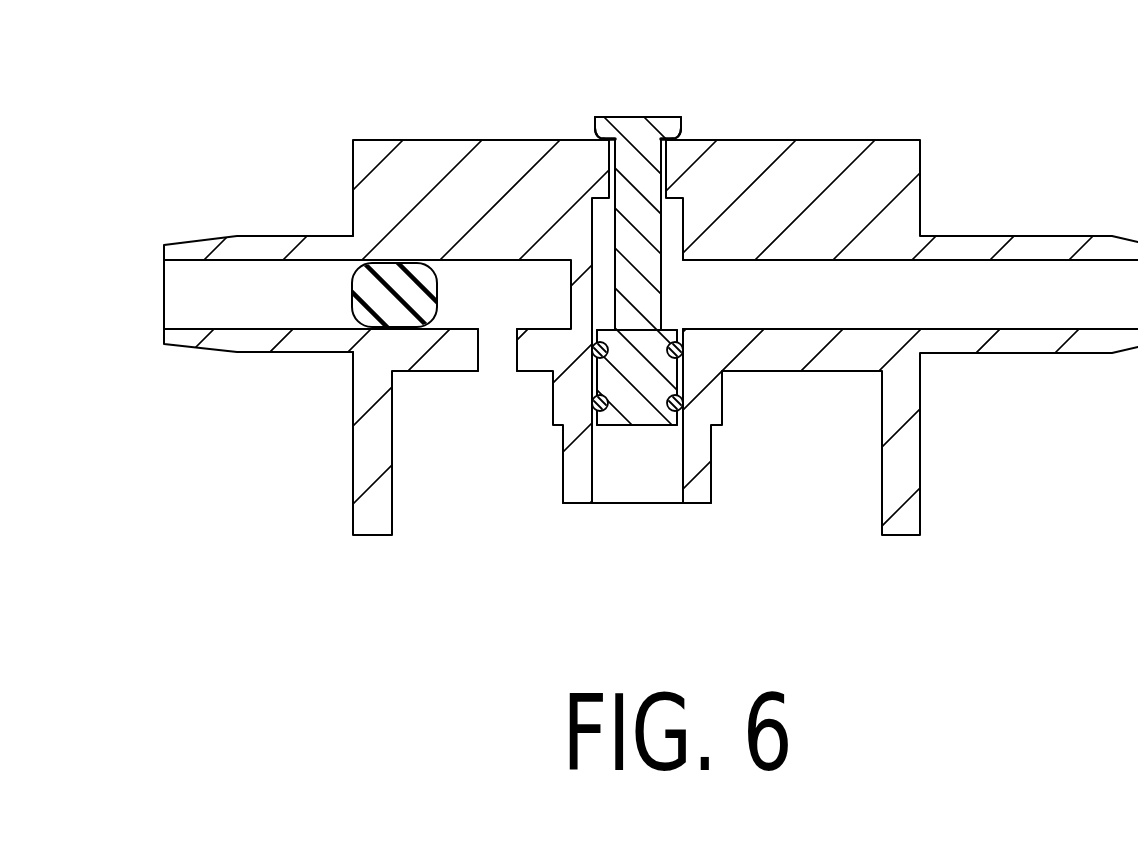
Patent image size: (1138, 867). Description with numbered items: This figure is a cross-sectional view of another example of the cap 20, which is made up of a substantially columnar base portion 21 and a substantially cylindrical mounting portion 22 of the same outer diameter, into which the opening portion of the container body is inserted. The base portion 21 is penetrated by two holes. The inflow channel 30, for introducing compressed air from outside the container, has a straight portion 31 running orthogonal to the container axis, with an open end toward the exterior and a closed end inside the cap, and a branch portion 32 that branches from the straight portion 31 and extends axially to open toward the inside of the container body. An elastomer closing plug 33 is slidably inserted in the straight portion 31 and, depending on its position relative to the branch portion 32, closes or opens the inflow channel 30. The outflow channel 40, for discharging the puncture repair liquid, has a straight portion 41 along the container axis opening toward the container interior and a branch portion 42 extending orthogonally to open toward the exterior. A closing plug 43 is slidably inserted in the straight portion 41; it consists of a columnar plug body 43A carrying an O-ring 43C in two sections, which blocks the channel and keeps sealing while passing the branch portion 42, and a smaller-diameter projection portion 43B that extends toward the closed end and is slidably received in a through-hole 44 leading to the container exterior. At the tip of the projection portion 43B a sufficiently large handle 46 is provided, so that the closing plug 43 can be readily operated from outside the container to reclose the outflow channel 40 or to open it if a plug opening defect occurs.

The cap 20 is at (902, 112).
The base portion 21 is at (415, 152).
The mounting portion 22 is at (372, 518).
The inflow channel 30 is at (257, 391).
The straight portion 31 is at (320, 315).
The branch portion 32 is at (497, 358).
The closing plug 33 is at (528, 303).
The outflow channel 40 is at (1030, 398).
The straight portion 41 is at (645, 458).
The branch portion 42 is at (919, 308).
The closing plug 43 is at (645, 268).
The plug body 43A is at (622, 378).
The projection portion 43B is at (638, 230).
The O-ring 43C is at (681, 402).
The through-hole 44 is at (613, 152).
The handle 46 is at (670, 127).